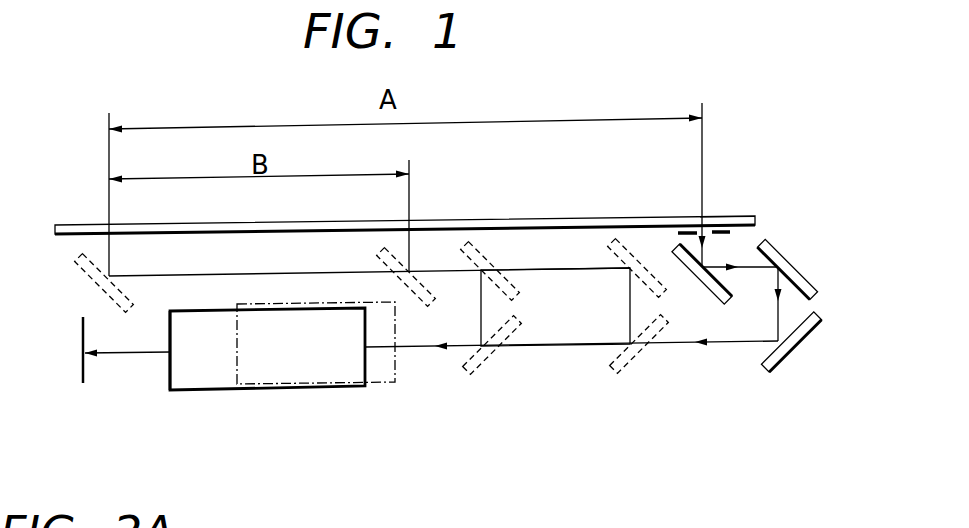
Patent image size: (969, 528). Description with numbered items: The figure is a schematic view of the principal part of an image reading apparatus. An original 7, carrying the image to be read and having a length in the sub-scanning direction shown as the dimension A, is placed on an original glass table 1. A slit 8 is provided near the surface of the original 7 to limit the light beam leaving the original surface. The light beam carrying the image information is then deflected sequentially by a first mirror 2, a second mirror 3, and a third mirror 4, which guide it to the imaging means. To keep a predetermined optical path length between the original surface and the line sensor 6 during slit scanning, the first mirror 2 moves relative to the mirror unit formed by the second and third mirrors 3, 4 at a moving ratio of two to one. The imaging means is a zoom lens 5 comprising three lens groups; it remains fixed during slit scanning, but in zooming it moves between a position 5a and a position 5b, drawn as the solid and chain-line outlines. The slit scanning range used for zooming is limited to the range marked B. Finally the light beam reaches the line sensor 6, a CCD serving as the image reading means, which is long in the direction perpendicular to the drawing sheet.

The original glass table 1 is at (728, 216).
The first mirror 2 is at (681, 270).
The second mirror 3 is at (797, 261).
The third mirror 4 is at (798, 343).
The zoom lens 5 is at (283, 390).
The position of zoom lens 5a is at (202, 389).
The position of zoom lens 5b is at (384, 376).
The line sensor 6 is at (82, 374).
The original 7 is at (616, 218).
The slit 8 is at (727, 236).